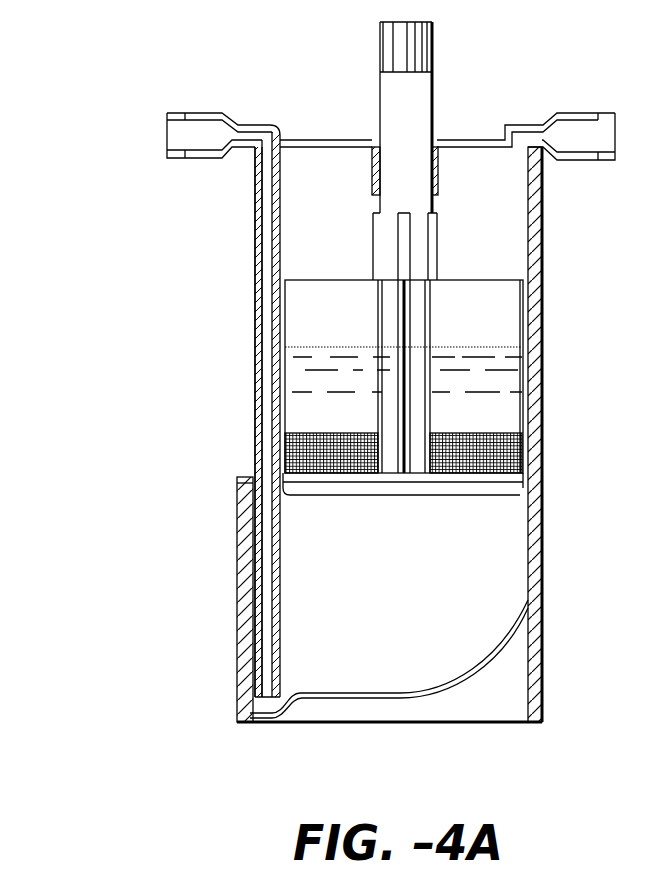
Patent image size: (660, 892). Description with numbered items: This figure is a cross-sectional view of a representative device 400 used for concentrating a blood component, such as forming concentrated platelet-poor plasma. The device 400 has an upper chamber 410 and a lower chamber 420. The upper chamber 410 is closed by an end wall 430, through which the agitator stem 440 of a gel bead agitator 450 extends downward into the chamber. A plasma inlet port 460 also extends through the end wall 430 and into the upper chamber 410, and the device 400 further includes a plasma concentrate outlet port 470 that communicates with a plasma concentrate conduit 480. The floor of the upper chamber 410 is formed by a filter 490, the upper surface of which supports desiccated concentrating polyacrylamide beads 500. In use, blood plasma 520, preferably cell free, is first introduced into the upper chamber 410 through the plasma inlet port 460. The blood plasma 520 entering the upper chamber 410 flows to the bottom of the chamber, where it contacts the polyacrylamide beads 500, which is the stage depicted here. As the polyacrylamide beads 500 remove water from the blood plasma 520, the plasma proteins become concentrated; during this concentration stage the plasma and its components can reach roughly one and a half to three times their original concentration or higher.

The device 400 is at (563, 275).
The upper chamber 410 is at (513, 227).
The lower chamber 420 is at (513, 535).
The end wall 430 is at (330, 140).
The agitator stem 440 is at (432, 88).
The gel bead agitator 450 is at (512, 318).
The plasma inlet port 460 is at (605, 112).
The plasma concentrate outlet port 470 is at (180, 112).
The plasma concentrate conduit 480 is at (253, 378).
The filter 490 is at (518, 492).
The desiccated concentrating polyacrylamide beads 500 is at (523, 450).
The blood plasma 520 is at (515, 383).